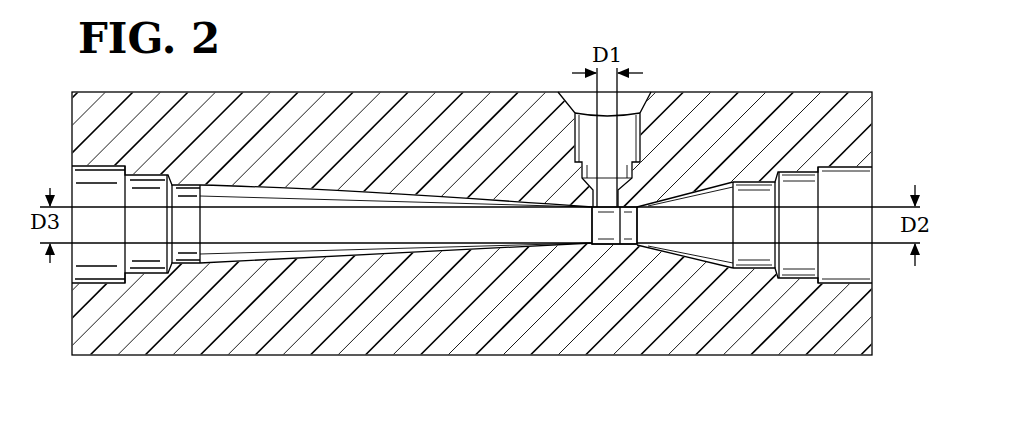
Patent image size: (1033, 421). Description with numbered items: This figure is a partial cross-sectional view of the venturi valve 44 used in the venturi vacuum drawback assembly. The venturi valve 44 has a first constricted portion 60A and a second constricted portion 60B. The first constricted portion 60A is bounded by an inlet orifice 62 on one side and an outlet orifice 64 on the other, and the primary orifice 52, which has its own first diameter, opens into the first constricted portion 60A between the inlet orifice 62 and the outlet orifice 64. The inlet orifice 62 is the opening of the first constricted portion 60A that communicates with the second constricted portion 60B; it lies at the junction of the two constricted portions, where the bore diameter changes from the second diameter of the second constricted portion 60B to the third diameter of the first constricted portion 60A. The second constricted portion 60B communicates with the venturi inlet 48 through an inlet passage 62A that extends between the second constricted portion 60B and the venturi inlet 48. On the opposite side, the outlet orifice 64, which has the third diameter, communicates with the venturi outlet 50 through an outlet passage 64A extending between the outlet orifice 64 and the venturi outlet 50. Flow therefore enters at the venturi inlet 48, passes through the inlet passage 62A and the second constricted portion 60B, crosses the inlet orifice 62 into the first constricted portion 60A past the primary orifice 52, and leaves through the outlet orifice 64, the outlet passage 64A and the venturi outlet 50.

The venturi valve 44 is at (843, 78).
The venturi inlet 48 is at (885, 183).
The venturi outlet 50 is at (67, 170).
The primary orifice 52 is at (593, 199).
The first constricted portion 60A is at (603, 246).
The second constricted portion 60B is at (627, 206).
The inlet orifice 62 is at (633, 228).
The inlet passage 62A is at (763, 253).
The outlet orifice 64 is at (592, 230).
The outlet passage 64A is at (300, 250).